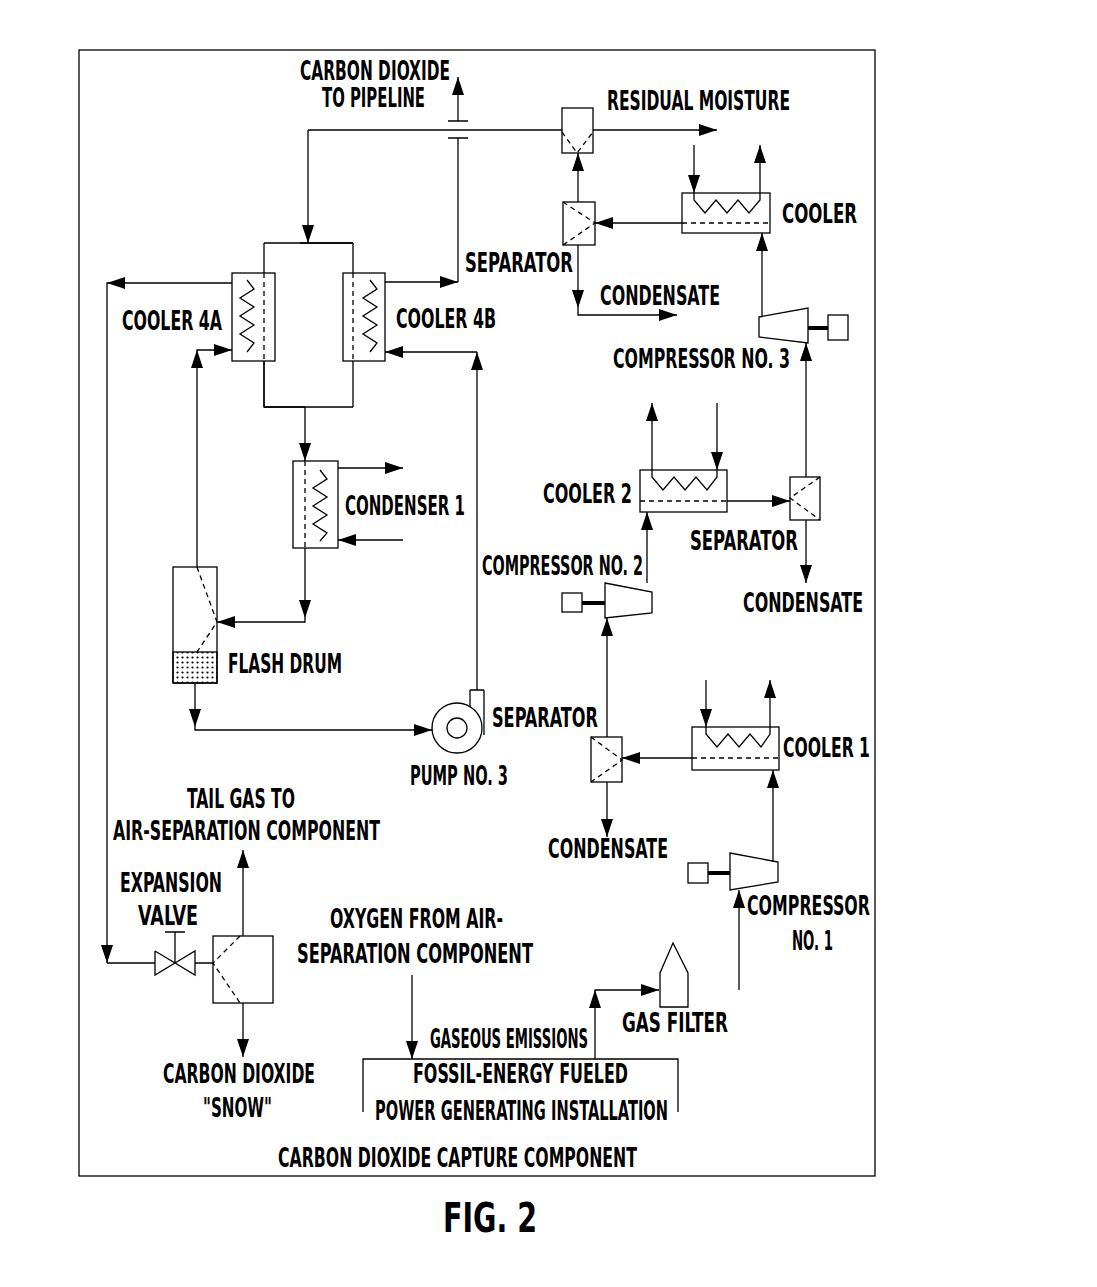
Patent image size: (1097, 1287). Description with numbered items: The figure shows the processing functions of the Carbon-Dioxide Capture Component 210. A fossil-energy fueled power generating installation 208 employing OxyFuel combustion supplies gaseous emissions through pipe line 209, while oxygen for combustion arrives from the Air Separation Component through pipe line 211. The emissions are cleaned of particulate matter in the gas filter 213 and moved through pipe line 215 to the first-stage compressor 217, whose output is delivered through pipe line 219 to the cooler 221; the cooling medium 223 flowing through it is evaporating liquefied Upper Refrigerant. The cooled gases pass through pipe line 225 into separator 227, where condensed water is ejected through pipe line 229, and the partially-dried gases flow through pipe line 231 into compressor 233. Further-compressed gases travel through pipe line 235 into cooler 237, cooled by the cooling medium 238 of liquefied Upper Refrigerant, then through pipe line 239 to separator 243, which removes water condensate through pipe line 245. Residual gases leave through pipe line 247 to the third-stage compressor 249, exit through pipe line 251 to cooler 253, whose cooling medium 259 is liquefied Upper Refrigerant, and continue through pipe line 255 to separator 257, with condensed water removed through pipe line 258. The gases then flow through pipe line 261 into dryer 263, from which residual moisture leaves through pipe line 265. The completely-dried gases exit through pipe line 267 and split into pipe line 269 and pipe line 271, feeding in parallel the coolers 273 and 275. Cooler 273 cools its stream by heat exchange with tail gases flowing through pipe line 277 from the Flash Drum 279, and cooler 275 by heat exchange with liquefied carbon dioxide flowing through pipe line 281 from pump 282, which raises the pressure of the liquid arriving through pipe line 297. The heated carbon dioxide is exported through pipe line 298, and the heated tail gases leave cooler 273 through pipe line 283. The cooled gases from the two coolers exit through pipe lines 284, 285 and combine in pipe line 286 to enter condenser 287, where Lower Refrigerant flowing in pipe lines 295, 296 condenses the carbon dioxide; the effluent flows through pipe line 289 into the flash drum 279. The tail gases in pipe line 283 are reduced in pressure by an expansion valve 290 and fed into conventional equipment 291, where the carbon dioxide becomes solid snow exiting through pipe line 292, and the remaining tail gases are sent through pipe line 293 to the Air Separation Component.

The fossil-energy fueled power generating installation 208 is at (678, 1097).
The pipe line 209 is at (612, 985).
The Carbon-Dioxide Capture Component 210 is at (815, 45).
The pipe line 211 is at (412, 980).
The gas filter 213 is at (663, 962).
The pipe line 215 is at (740, 953).
The first-stage compressor 217 is at (778, 873).
The pipe line 219 is at (773, 830).
The cooler 221 is at (779, 728).
The cooling medium 223 is at (705, 693).
The pipe line 225 is at (660, 760).
The separator 227 is at (591, 753).
The pipe line 229 is at (607, 793).
The pipe line 231 is at (607, 688).
The compressor 233 is at (652, 600).
The pipe line 235 is at (647, 547).
The cooler 237 is at (727, 470).
The cooling medium 238 is at (647, 447).
The pipe line 239 is at (747, 501).
The separator 243 is at (820, 500).
The pipe line 245 is at (807, 537).
The pipe line 247 is at (807, 405).
The third-stage compressor 249 is at (803, 310).
The pipe line 251 is at (763, 273).
The cooler 253 is at (770, 200).
The pipe line 255 is at (663, 223).
The separator 257 is at (597, 238).
The pipe line 258 is at (610, 315).
The cooling medium 259 is at (762, 182).
The pipe line 261 is at (580, 190).
The dryer 263 is at (577, 108).
The pipe line 265 is at (658, 130).
The pipe line 267 is at (308, 130).
The pipe line 269 is at (283, 243).
The pipe line 271 is at (338, 243).
The cooler 273 is at (277, 325).
The cooler 275 is at (385, 273).
The pipe line 277 is at (197, 428).
The Flash Drum 279 is at (173, 583).
The pipe line 281 is at (477, 423).
The pump 282 is at (437, 741).
The pipe line 283 is at (156, 283).
The pipe line 284 is at (264, 377).
The pipe line 285 is at (353, 383).
The pipe line 286 is at (305, 418).
The condenser 287 is at (293, 503).
The pipe line 289 is at (307, 567).
The expansion valve 290 is at (180, 972).
The conventional equipment 291 is at (260, 977).
The pipe line 292 is at (247, 1013).
The pipe line 293 is at (243, 903).
The pipe line 295 is at (392, 540).
The pipe line 296 is at (362, 468).
The pipe line 297 is at (277, 730).
The pipe line 298 is at (458, 160).